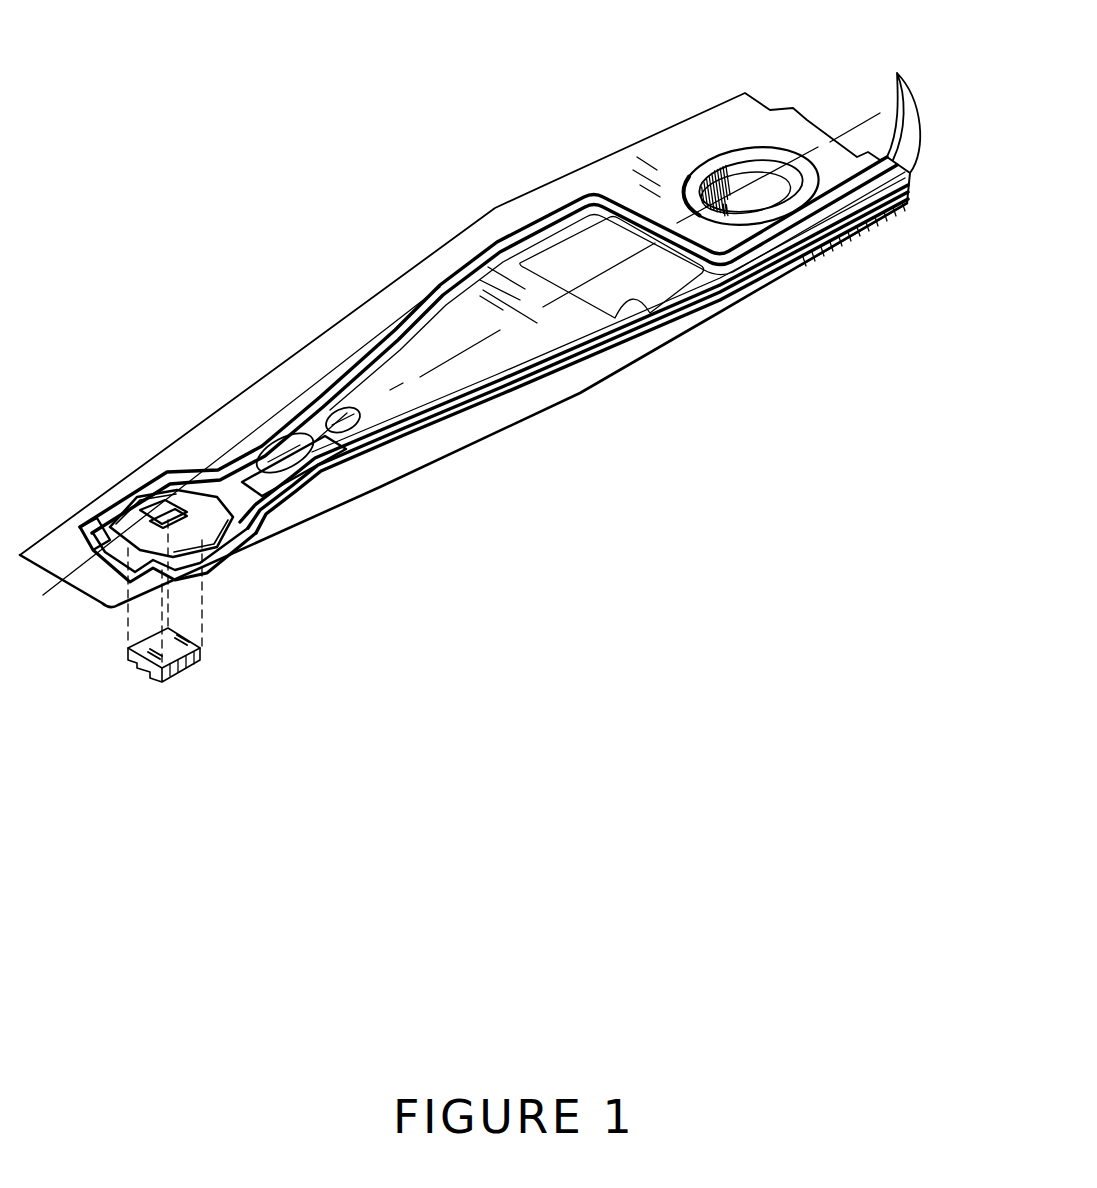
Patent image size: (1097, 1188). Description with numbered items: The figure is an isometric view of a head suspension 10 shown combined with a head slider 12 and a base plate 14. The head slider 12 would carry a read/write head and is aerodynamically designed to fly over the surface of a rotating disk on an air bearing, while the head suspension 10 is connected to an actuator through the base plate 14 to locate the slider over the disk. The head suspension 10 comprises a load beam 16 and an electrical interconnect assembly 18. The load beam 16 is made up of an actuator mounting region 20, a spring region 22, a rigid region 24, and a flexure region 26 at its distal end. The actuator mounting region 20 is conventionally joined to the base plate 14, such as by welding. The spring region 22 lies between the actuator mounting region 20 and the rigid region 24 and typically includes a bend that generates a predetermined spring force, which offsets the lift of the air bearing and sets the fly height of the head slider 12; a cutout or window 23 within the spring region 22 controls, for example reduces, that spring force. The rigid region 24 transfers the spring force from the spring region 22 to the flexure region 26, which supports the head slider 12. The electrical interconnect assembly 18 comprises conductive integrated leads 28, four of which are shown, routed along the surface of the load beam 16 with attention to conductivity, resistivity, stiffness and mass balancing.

The head suspension 10 is at (399, 223).
The head slider 12 is at (197, 666).
The base plate 14 is at (886, 214).
The load beam 16 is at (287, 383).
The electrical interconnect assembly 18 is at (536, 210).
The actuator mounting region 20 is at (722, 130).
The spring region 22 is at (700, 318).
The window 23 is at (617, 305).
The rigid region 24 is at (427, 447).
The flexure region 26 is at (116, 470).
The integrated leads 28 is at (899, 109).